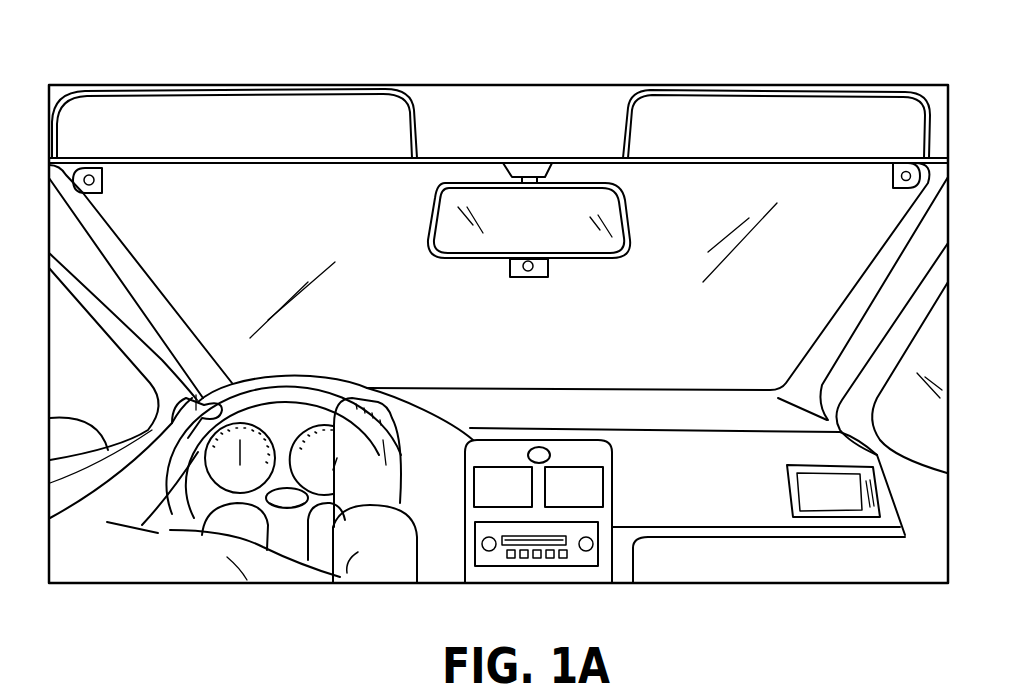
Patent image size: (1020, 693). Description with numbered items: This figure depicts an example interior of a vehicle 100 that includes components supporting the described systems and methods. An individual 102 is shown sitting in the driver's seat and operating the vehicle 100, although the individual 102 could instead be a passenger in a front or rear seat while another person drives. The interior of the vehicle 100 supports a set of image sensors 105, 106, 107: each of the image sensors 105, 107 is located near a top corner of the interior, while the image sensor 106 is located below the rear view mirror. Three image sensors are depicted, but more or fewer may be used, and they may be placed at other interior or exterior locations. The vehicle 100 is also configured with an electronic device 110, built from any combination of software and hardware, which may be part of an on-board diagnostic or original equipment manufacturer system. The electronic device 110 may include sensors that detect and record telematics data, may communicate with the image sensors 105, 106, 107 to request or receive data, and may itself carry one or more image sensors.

The vehicle 100 is at (587, 44).
The individual 102 is at (118, 564).
The image sensor 105 is at (104, 178).
The image sensor 106 is at (530, 272).
The image sensor 107 is at (892, 177).
The electronic device 110 is at (573, 452).